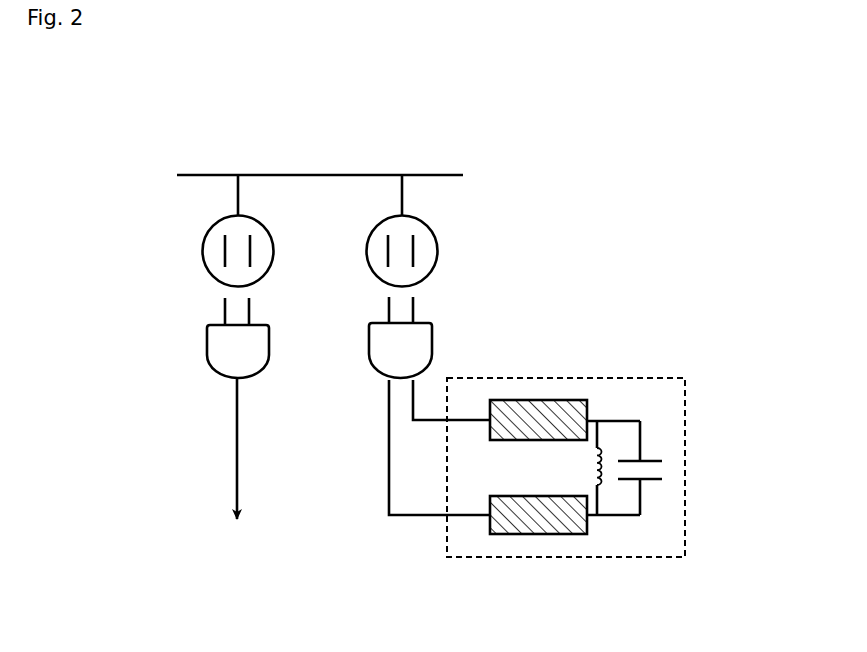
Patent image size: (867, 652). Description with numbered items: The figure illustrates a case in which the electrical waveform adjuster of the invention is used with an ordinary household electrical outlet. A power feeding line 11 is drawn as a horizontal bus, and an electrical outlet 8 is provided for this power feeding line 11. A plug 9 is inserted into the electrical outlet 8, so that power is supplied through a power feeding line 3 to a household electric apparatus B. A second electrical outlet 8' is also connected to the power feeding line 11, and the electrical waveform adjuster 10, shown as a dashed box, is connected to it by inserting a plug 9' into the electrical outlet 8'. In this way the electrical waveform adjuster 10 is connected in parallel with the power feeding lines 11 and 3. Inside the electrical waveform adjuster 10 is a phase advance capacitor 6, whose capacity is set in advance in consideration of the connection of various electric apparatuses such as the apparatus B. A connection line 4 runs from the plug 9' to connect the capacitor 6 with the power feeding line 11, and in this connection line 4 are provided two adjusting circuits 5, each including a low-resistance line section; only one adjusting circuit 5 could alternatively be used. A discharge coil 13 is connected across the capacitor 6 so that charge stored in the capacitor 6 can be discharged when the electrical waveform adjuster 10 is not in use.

The power feeding line 11 is at (358, 175).
The electrical outlet 8 is at (198, 240).
The electrical outlet 8' is at (455, 231).
The plug 9 is at (196, 361).
The plug 9' is at (455, 337).
The power feeding line 3 is at (237, 435).
The connection line 4 is at (432, 421).
The adjusting circuit 5 is at (548, 400).
The phase advance capacitor 6 is at (655, 467).
The electrical waveform adjuster 10 is at (688, 391).
The discharge coil 13 is at (600, 498).